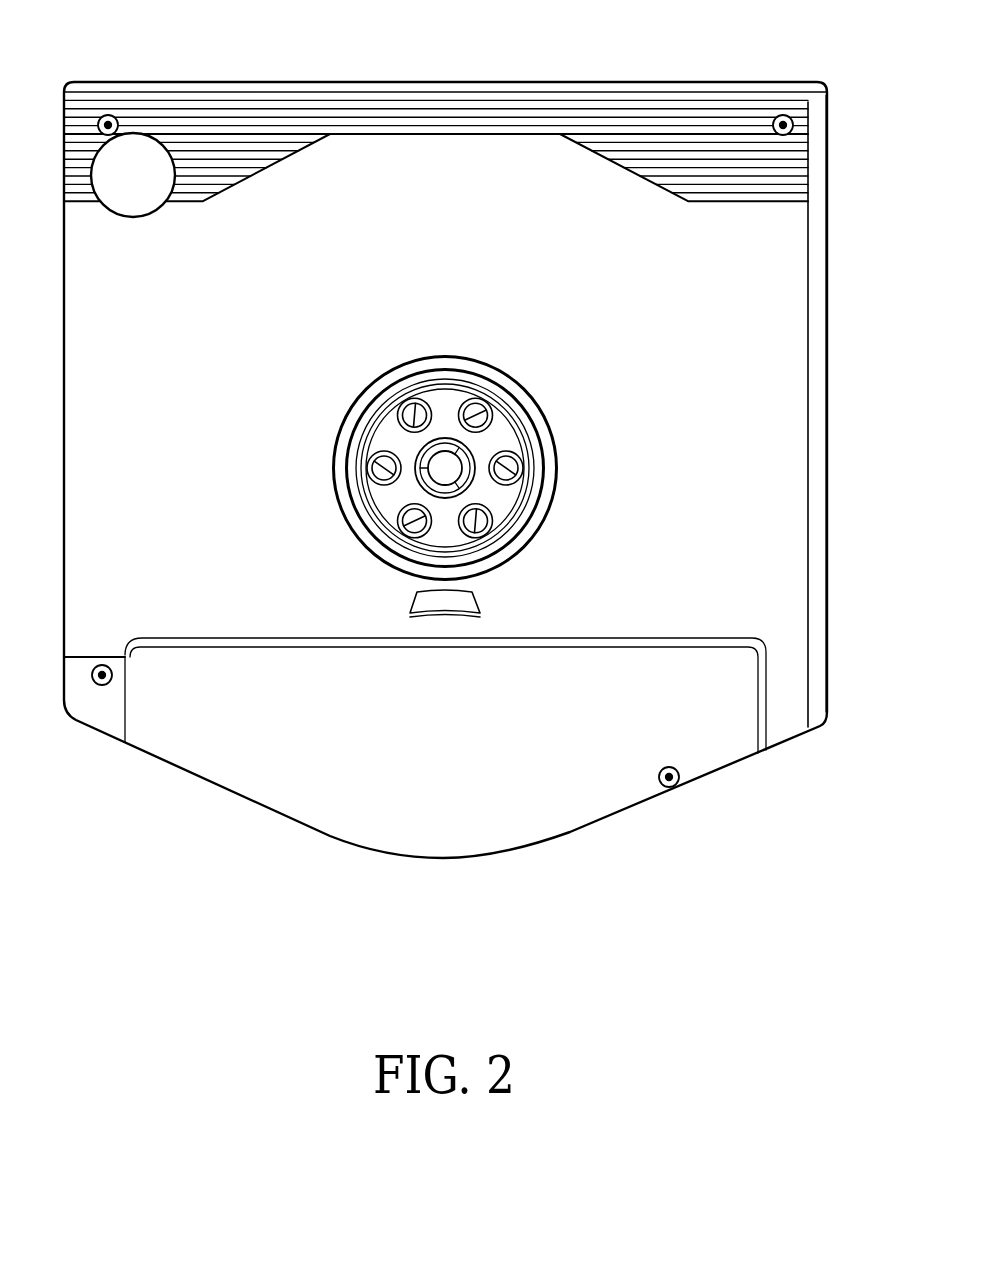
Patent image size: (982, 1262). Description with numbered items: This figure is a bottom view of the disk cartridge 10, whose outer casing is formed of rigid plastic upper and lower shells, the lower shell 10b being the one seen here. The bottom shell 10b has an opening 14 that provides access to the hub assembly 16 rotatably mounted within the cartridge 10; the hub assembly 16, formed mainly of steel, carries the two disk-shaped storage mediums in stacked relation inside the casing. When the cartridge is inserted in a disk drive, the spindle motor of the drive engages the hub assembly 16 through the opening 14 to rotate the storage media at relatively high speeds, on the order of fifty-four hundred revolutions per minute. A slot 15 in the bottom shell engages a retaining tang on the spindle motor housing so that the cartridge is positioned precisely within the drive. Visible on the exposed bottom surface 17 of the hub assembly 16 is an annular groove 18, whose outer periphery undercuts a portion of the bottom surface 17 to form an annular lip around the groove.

The disk cartridge 10 is at (367, 80).
The lower shell 10b is at (768, 263).
The opening 14 is at (553, 435).
The slot 15 is at (412, 612).
The hub assembly 16 is at (556, 488).
The bottom surface 17 is at (480, 368).
The annular groove 18 is at (367, 427).